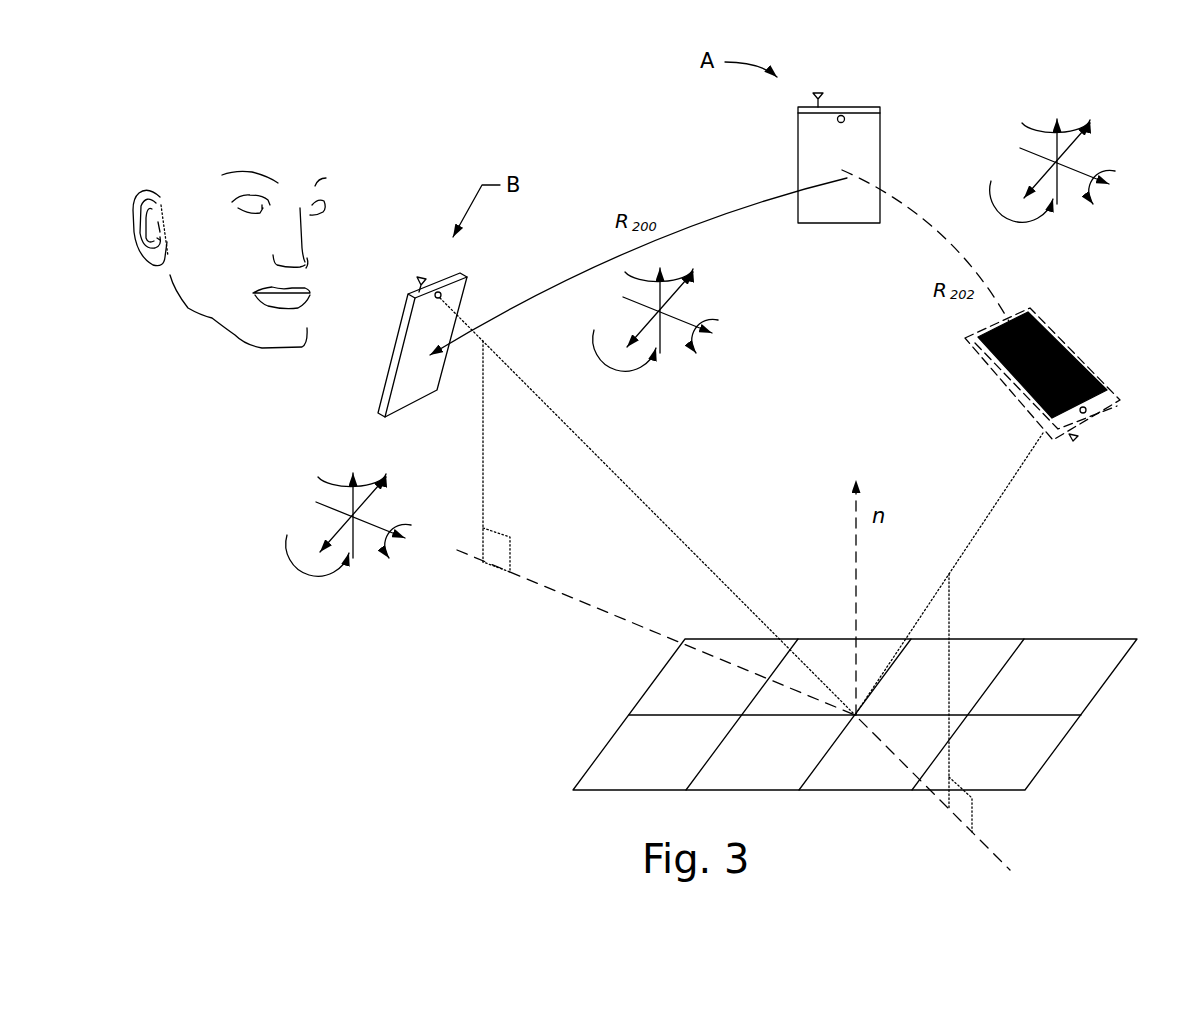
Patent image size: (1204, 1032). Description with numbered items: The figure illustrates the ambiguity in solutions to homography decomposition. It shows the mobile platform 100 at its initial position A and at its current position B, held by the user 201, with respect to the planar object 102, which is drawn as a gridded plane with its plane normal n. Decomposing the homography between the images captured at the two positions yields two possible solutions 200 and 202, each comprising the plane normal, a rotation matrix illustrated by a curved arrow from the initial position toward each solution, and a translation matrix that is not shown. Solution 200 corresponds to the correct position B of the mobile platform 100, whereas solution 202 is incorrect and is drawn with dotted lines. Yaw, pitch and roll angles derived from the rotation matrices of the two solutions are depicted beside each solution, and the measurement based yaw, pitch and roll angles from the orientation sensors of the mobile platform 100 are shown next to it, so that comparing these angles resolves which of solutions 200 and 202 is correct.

The mobile platform 100 is at (880, 138).
The planar object 102 is at (1053, 639).
The solution 200 is at (322, 401).
The user 201 is at (316, 192).
The solution 202 is at (1103, 308).